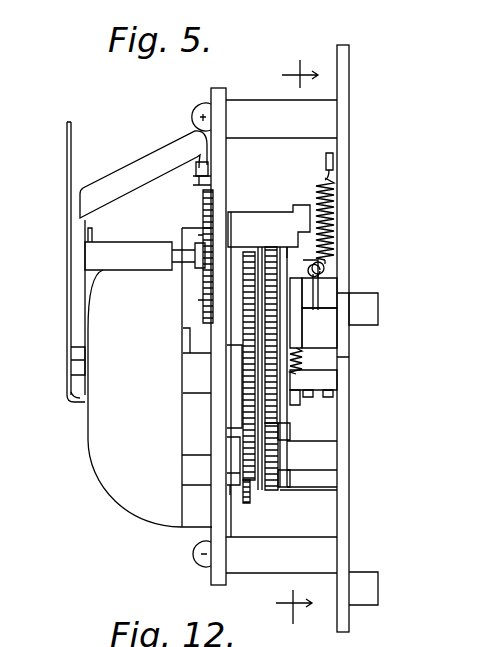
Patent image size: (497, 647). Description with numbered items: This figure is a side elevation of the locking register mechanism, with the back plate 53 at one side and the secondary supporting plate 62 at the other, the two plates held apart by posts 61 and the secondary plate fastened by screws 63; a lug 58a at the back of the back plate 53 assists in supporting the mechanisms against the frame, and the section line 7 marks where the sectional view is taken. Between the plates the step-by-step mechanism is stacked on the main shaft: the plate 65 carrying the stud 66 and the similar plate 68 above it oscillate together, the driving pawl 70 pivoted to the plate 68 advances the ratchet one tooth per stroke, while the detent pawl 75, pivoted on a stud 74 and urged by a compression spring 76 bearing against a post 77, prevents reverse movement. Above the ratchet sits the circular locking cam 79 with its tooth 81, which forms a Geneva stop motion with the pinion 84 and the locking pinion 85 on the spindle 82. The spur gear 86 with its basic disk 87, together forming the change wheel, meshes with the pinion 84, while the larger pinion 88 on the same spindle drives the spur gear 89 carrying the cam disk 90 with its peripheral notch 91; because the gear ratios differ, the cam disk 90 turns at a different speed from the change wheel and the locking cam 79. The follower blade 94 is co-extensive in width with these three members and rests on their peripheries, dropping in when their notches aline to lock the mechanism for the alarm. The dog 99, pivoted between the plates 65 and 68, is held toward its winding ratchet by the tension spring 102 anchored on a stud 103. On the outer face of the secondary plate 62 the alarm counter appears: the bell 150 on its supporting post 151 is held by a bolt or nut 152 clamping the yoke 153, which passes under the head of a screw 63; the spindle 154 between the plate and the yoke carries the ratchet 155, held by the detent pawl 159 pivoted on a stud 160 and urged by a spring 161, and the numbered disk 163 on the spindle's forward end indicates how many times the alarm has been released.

The section line 7 is at (297, 343).
The back plate 53 is at (343, 504).
The lug 58a is at (357, 592).
The posts 61 is at (261, 130).
The secondary supporting plate 62 is at (216, 520).
The screws 63 is at (197, 116).
The plate 65 is at (310, 397).
The stud 66 is at (363, 300).
The plate 68 is at (330, 398).
The driving pawl 70 is at (294, 405).
The stud 74 is at (319, 328).
The detent pawl 75 is at (291, 300).
The compression spring 76 is at (300, 362).
The post 77 is at (318, 381).
The locking cam 79 is at (282, 262).
The tooth 81 is at (274, 436).
The spindle 82 is at (322, 455).
The pinion 84 is at (271, 450).
The locking pinion 85 is at (285, 486).
The spur gear 86 is at (260, 273).
The basic disk 87 is at (207, 212).
The pinion 88 is at (249, 492).
The spur gear 89 is at (247, 313).
The cam disk 90 is at (235, 386).
The notch 91 is at (242, 336).
The follower blade 94 is at (285, 232).
The dog 99 is at (325, 300).
The tension spring 102 is at (330, 230).
The stud 103 is at (326, 160).
The bell 150 is at (108, 453).
The supporting post 151 is at (193, 381).
The bolt or nut 152 is at (73, 386).
The yoke 153 is at (80, 337).
The spindle 154 is at (101, 266).
The ratchet 155 is at (205, 228).
The detent pawl 159 is at (209, 183).
The stud 160 is at (198, 170).
The spring 161 is at (201, 165).
The disk 163 is at (68, 195).